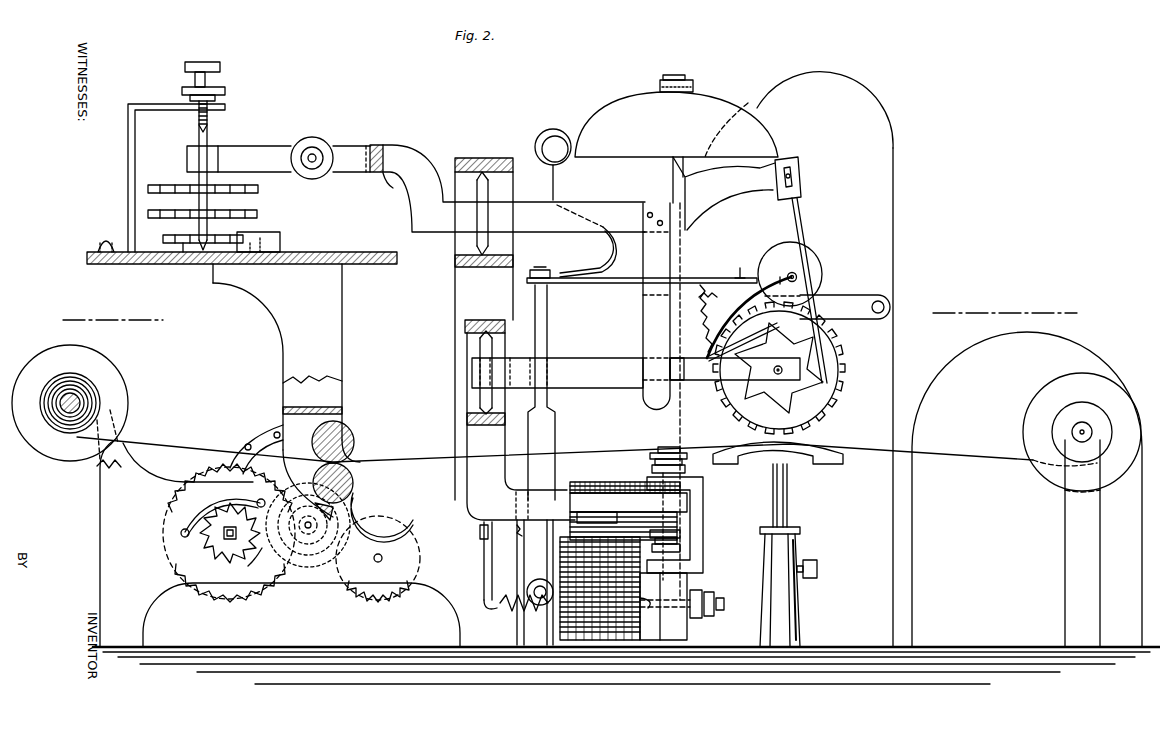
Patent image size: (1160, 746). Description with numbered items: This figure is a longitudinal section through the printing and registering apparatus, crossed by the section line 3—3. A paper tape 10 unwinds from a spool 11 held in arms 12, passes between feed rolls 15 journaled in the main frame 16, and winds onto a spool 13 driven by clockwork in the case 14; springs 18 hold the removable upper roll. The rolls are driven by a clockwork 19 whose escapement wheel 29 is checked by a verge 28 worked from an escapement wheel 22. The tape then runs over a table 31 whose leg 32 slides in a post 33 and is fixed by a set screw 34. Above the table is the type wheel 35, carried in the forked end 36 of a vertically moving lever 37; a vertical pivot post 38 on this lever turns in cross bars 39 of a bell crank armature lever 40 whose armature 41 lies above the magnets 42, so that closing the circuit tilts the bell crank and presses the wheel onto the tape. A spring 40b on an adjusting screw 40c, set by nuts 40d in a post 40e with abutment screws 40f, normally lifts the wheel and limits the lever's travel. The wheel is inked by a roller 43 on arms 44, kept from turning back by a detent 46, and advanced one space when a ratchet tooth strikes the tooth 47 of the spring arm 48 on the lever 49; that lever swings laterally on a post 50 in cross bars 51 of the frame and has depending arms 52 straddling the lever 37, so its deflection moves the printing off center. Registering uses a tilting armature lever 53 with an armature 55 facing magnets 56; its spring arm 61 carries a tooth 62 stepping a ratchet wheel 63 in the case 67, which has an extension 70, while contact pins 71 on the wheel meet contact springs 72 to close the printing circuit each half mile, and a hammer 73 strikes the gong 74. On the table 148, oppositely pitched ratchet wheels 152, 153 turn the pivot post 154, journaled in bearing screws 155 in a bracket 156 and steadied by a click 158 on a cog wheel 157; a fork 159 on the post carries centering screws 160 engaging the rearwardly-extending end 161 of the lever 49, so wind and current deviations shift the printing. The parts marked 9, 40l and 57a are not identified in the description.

The section line 3— 3 is at (567, 317).
The bracket 9 is at (704, 500).
The tape 10 is at (962, 452).
The spool 11 is at (125, 395).
The arms 12 is at (98, 480).
The spool 13 is at (1128, 414).
The case 14 is at (986, 405).
The feed rolls 15 is at (350, 432).
The main frame 16 is at (455, 296).
The springs 18 is at (349, 485).
The clockwork 19 is at (229, 533).
The escapement wheel 22 is at (203, 453).
The verge 28 is at (392, 517).
The escapement wheel 29 is at (301, 565).
The table 31 is at (805, 470).
The leg 32 is at (788, 499).
The post 33 is at (800, 590).
The set screw 34 is at (818, 566).
The type wheel 35 is at (818, 405).
The forked end 36 is at (703, 382).
The lever 37 is at (625, 380).
The vertical pivot post 38 is at (500, 350).
The cross bars 39 is at (465, 326).
The bell crank armature lever 40 is at (467, 445).
The spring 40b is at (462, 623).
The adjusting screw 40c is at (672, 610).
The nuts 40d is at (710, 580).
The post 40e is at (690, 572).
The abutment screws 40f is at (682, 532).
The adjusting nut 40l is at (687, 468).
The armature 41 is at (601, 467).
The magnets 42 is at (593, 561).
The roller 43 is at (818, 260).
The supporting arms 44 is at (784, 272).
The detent 46 is at (743, 341).
The tooth 47 is at (822, 363).
The spring arm 48 is at (802, 230).
The lever 49 is at (745, 200).
The vertical pivoted post 50 is at (548, 152).
The cross bars 51 is at (440, 271).
The depending arms 52 is at (737, 305).
The tilting armature lever 53 is at (556, 430).
The armature 55 is at (517, 540).
The magnets 56 is at (595, 510).
The post 57a is at (484, 560).
The spring arm 61 is at (705, 272).
The tooth 62 is at (734, 268).
The ratchet wheel 63 is at (738, 317).
The case 67 is at (890, 387).
The extension 70 is at (825, 110).
The contact pins 71 is at (649, 401).
The contact springs 72 is at (850, 318).
The hammer 73 is at (612, 250).
The gong 74 is at (676, 139).
The table 148 is at (242, 248).
The ratchet wheel 152 is at (256, 193).
The ratchet wheel 153 is at (256, 217).
The pivot post 154 is at (210, 143).
The bearing screws 155 is at (222, 90).
The bracket 156 is at (178, 137).
The cog wheel 157 is at (190, 266).
The click 158 is at (258, 266).
The fork 159 is at (300, 142).
The centering screws 160 is at (372, 142).
The rearwardly-extending end 161 is at (379, 185).